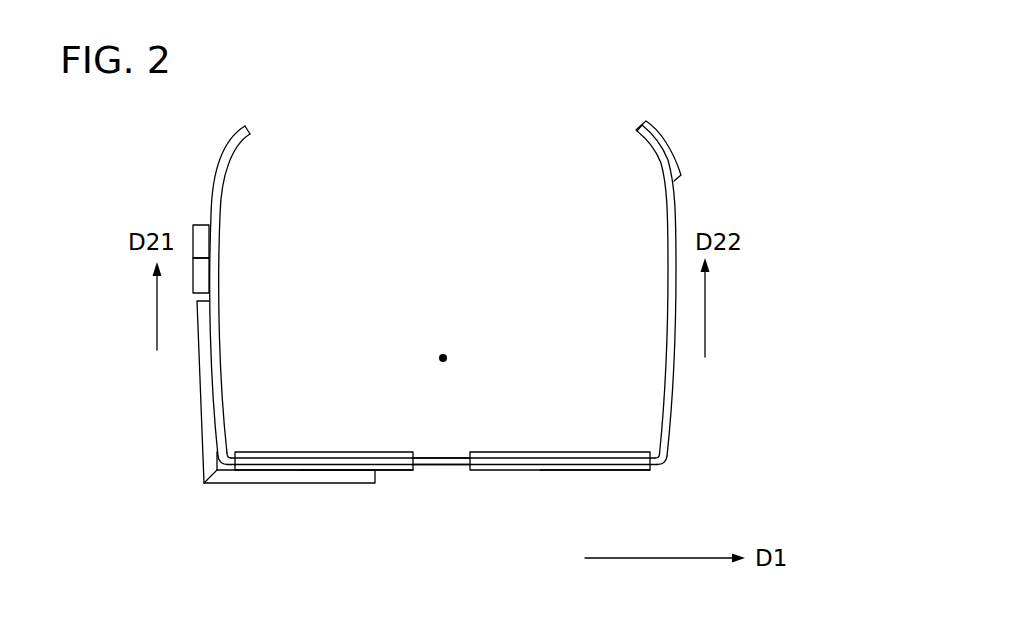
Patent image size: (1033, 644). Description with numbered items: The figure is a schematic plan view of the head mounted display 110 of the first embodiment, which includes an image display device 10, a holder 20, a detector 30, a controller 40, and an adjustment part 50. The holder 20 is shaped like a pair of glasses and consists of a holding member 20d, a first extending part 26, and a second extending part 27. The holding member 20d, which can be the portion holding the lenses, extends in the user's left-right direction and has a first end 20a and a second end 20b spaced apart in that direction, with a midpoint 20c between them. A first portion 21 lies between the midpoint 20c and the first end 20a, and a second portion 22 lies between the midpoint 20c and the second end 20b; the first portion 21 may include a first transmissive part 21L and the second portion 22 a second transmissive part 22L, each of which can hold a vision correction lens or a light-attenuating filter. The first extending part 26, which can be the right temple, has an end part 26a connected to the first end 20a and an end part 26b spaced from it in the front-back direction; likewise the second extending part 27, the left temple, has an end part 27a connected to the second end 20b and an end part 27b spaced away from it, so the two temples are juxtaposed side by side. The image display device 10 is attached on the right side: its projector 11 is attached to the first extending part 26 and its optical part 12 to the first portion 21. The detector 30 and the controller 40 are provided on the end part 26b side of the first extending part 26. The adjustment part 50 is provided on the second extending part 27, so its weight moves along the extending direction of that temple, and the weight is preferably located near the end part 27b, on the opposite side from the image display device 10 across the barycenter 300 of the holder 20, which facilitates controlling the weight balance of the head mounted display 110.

The image display device 10 is at (128, 443).
The projector 11 is at (205, 450).
The optical part 12 is at (228, 478).
The holder 20 is at (203, 185).
The first end 20a is at (224, 451).
The second end 20b is at (659, 453).
The midpoint 20c is at (438, 458).
The holding member 20d is at (512, 517).
The first portion 21 is at (398, 472).
The first transmissive part 21L is at (384, 471).
The second portion 22 is at (553, 462).
The second transmissive part 22L is at (612, 471).
The first extending part 26 is at (218, 251).
The end part 26a is at (222, 450).
The end part 26b is at (250, 129).
The second extending part 27 is at (667, 260).
The end part 27a is at (660, 449).
The end part 27b is at (635, 130).
The detector 30 is at (202, 230).
The controller 40 is at (198, 278).
The adjustment part 50 is at (667, 147).
The head mounted display 110 is at (724, 150).
The barycenter 300 is at (433, 368).